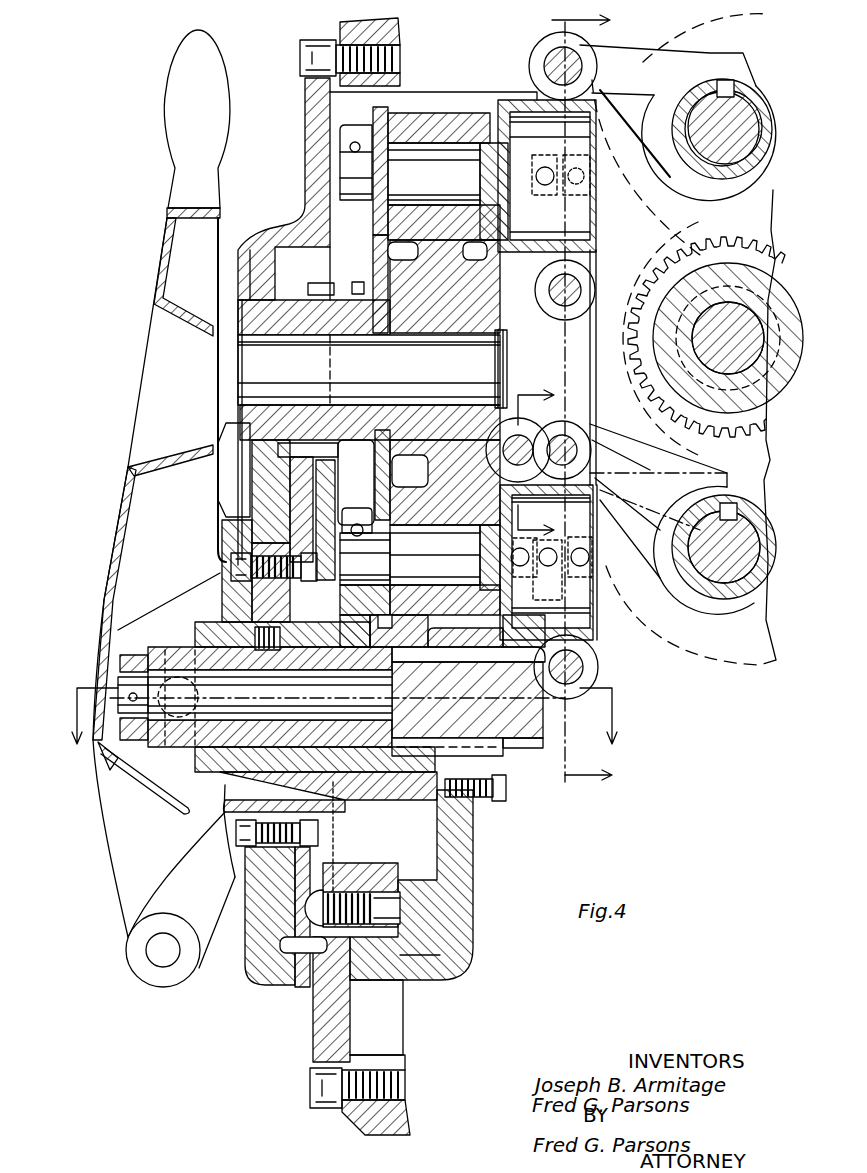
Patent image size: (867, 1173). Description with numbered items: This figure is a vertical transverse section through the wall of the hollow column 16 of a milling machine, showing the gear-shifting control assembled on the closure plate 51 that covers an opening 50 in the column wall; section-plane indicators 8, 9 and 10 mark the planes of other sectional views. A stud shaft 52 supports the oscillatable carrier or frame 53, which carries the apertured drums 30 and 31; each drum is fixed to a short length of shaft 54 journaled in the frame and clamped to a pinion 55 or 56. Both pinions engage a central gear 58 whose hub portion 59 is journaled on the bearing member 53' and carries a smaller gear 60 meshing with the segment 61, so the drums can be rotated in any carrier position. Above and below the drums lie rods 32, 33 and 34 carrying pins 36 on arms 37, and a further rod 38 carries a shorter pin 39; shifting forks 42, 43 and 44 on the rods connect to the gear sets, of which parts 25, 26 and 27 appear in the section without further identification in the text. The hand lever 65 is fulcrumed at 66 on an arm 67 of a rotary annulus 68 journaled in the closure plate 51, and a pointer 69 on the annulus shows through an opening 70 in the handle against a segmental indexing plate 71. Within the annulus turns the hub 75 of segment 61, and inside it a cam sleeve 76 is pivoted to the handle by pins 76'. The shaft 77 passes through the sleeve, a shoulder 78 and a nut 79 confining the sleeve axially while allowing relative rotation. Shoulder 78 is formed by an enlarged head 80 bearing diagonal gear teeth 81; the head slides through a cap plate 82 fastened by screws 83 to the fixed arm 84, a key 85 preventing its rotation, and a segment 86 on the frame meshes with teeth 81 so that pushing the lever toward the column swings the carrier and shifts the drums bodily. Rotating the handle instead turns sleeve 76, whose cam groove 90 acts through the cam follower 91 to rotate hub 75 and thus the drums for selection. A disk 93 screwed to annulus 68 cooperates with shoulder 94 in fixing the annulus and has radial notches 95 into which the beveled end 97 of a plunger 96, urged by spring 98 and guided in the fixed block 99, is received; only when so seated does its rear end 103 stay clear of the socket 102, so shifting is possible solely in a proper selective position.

The section line 8- 8 is at (578, 402).
The section line 9- 9 is at (536, 453).
The section line 10- 10 is at (340, 716).
The hollow column 16 is at (390, 36).
The lower crank shaft 25 is at (722, 600).
The gear 26 is at (707, 307).
The upper crank shaft 27 is at (745, 95).
The drum 30 is at (552, 182).
The drum 31 is at (592, 615).
The rod 32 is at (578, 56).
The rod 33 is at (585, 292).
The rod 34 is at (533, 432).
The pin 36 is at (580, 222).
The arm 37 is at (520, 100).
The additional rod 38 is at (592, 432).
The shorter pin 39 is at (598, 578).
The shifting fork 42 is at (656, 56).
The shifting fork 43 is at (568, 424).
The shifting fork 44 is at (666, 455).
The opening 50 is at (390, 90).
The closure plate 51 is at (305, 152).
The stud shaft 52 is at (487, 375).
The carrier 53 is at (444, 286).
The bearing member 53' is at (363, 284).
The shaft 54 is at (545, 185).
The pinion 55 is at (388, 110).
The pinion 56 is at (445, 527).
The central gear 58 is at (390, 470).
The hub portion 59 is at (364, 293).
The smaller gear 60 is at (322, 283).
The segment 61 is at (322, 511).
The hand lever 65 is at (170, 124).
The fulcrum 66 is at (170, 965).
The arm 67 is at (215, 925).
The rotary annulus 68 is at (232, 603).
The pointer 69 is at (226, 486).
The opening 70 is at (152, 403).
The segmental indexing plate 71 is at (238, 380).
The hub 75 is at (226, 780).
The cam sleeve 76 is at (145, 680).
The pins 76' is at (100, 677).
The shaft 77 is at (205, 725).
The shoulder 78 is at (398, 702).
The nut 79 is at (112, 760).
The head member 80 is at (548, 742).
The segmental gear teeth 81 is at (556, 690).
The cap plate 82 is at (500, 774).
The screws 83 is at (498, 798).
The fixed arm 84 is at (470, 906).
The key 85 is at (455, 740).
The segment 86 is at (428, 640).
The cam groove 90 is at (310, 668).
The cam follower 91 is at (268, 660).
The disk 93 is at (315, 862).
The shoulder 94 is at (231, 535).
The notches 95 is at (290, 958).
The plunger 96 is at (322, 960).
The beveled end 97 is at (312, 950).
The spring 98 is at (348, 880).
The fixed block 99 is at (378, 888).
The socket 102 is at (470, 935).
The rear end 103 is at (428, 965).